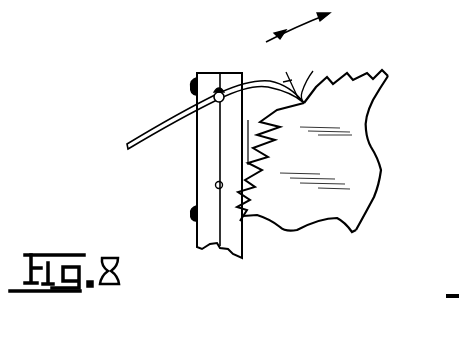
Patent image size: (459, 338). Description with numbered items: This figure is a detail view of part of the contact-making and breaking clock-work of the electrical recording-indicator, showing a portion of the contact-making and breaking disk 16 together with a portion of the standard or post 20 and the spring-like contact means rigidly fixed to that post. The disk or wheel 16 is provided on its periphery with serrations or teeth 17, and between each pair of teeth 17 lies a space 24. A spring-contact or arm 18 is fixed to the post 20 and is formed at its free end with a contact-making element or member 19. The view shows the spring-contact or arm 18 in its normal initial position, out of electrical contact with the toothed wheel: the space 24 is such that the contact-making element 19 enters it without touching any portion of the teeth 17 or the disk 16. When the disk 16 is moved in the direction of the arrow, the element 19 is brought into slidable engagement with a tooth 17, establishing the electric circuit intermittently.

The contact-making and breaking disk 16 is at (352, 142).
The serrations or teeth 17 is at (291, 106).
The spring-contact or arm 18 is at (251, 84).
The contact-making element or member 19 is at (293, 71).
The standard or post 20 is at (197, 167).
The space 24 is at (321, 75).